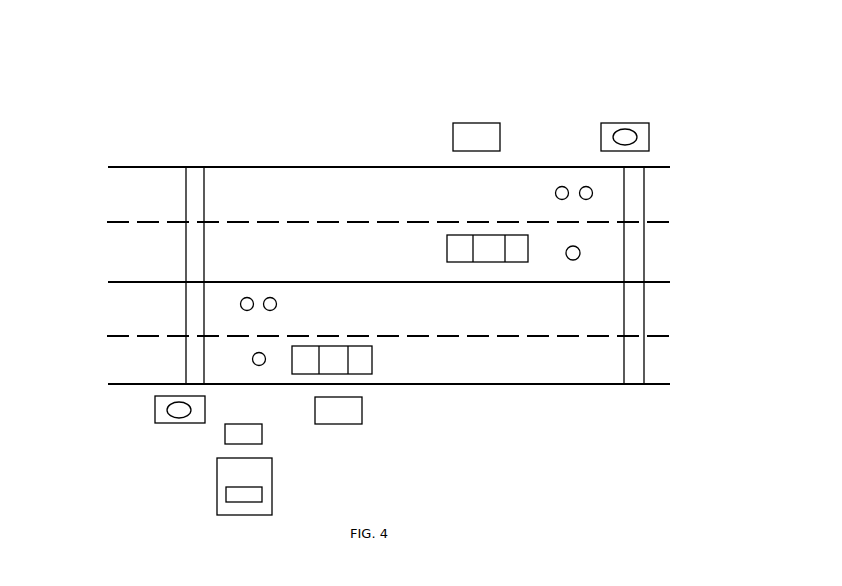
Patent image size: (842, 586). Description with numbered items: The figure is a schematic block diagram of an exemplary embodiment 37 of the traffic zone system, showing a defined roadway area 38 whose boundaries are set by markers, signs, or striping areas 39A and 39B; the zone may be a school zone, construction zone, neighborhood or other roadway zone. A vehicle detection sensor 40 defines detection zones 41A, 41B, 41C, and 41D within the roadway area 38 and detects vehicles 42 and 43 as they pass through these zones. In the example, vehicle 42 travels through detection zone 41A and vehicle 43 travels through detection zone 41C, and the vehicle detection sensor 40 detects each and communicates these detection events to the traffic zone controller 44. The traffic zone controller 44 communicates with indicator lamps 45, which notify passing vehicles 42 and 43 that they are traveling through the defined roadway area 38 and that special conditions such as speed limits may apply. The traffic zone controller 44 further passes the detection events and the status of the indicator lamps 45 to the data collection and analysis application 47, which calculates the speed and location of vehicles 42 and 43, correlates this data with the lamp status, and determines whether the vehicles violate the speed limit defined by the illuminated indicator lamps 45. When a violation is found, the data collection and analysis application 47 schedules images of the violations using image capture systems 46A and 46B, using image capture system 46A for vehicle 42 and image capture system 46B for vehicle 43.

The exemplary embodiment 37 is at (153, 120).
The defined roadway area 38 is at (416, 203).
The striping area 39A is at (192, 178).
The striping area 39B is at (632, 375).
The vehicle detection sensor 40 is at (225, 435).
The detection zone 41A is at (253, 361).
The detection zone 41B is at (277, 304).
The detection zone 41C is at (580, 253).
The detection zone 41D is at (554, 191).
The vehicle 42 is at (362, 361).
The vehicle 43 is at (453, 237).
The traffic zone controller 44 is at (213, 510).
The indicator lamps 45 is at (645, 136).
The image capture system 46A is at (362, 405).
The image capture system 46B is at (492, 136).
The data collection and analysis application 47 is at (226, 493).